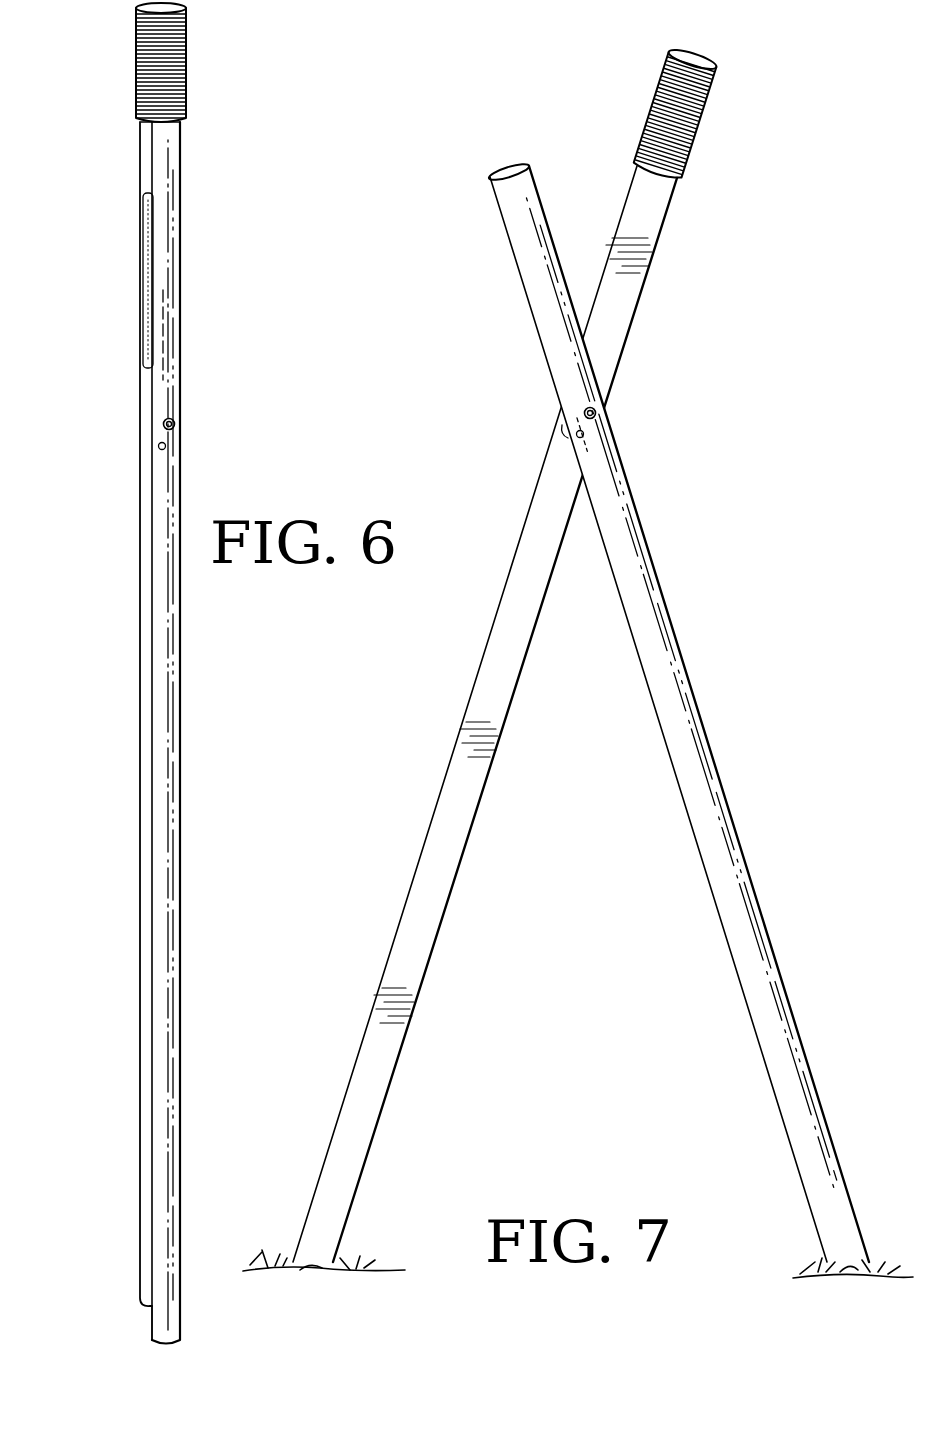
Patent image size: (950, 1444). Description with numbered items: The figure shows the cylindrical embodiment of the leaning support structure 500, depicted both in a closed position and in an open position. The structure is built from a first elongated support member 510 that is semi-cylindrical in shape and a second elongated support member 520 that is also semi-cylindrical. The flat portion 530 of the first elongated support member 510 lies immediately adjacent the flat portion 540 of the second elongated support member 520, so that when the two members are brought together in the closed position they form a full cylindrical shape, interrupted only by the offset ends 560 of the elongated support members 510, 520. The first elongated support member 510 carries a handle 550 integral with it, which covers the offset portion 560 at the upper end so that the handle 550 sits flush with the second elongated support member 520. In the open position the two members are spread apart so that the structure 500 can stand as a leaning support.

In FIG. 6, the pole assembly 500 is at (246, 124).
In FIG. 7, the pole assembly 500 is at (748, 128).
In FIG. 6, the pole tube 510 is at (130, 490).
In FIG. 6, the slot 520 is at (192, 368).
In FIG. 7, the first pole 530 is at (508, 168).
In FIG. 7, the second pole 540 is at (603, 322).
In FIG. 6, the threaded end cap 550 is at (136, 55).
In FIG. 6, the pole end portion 560 is at (135, 1305).